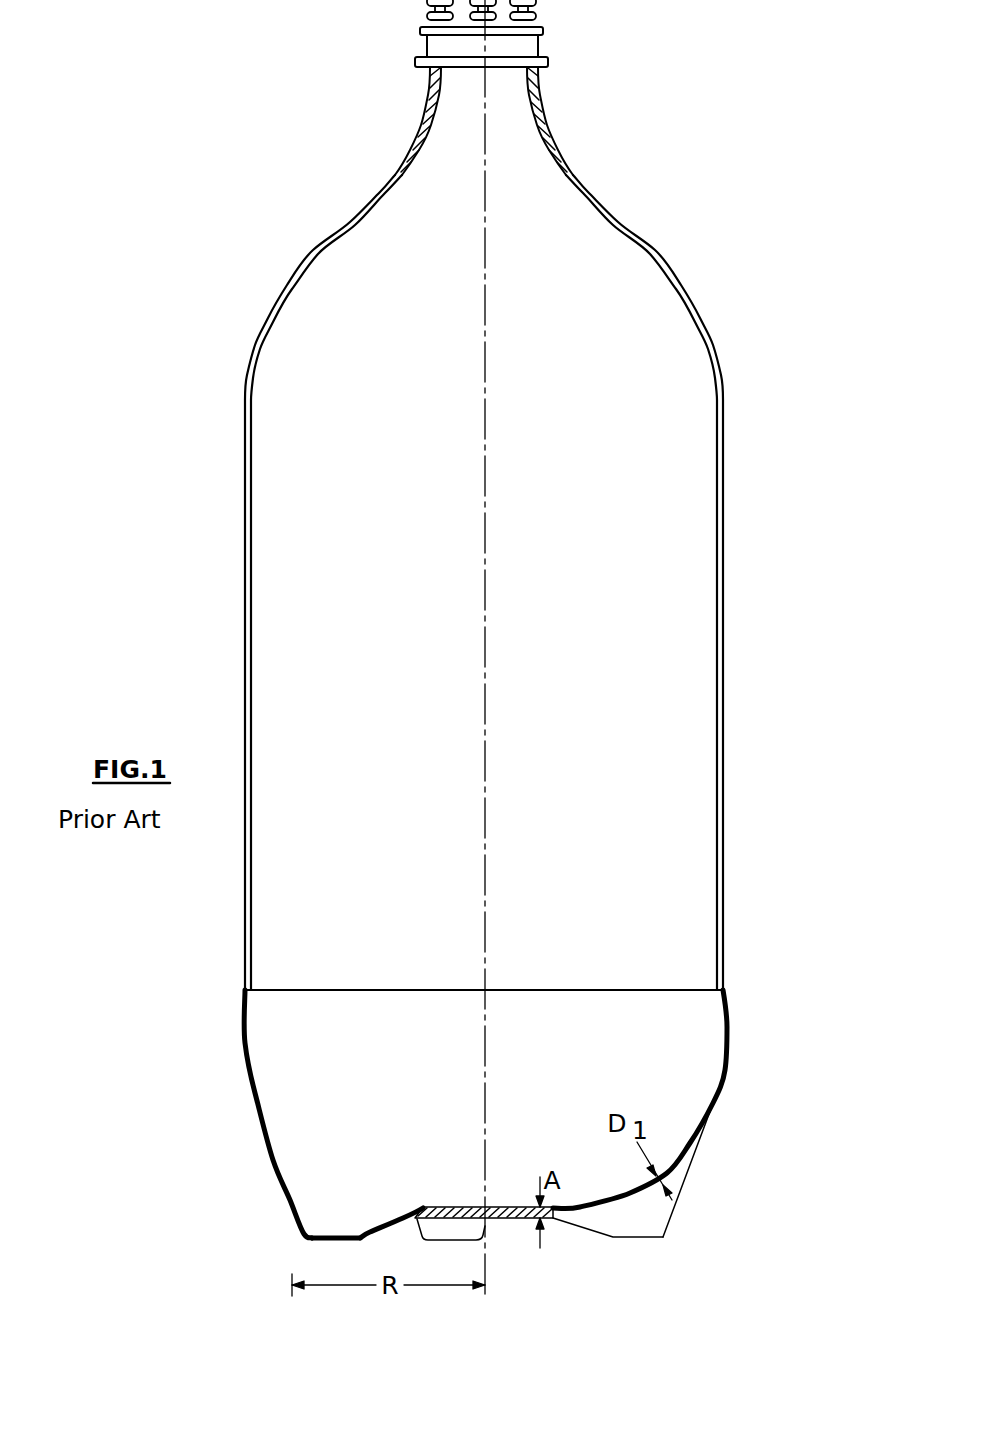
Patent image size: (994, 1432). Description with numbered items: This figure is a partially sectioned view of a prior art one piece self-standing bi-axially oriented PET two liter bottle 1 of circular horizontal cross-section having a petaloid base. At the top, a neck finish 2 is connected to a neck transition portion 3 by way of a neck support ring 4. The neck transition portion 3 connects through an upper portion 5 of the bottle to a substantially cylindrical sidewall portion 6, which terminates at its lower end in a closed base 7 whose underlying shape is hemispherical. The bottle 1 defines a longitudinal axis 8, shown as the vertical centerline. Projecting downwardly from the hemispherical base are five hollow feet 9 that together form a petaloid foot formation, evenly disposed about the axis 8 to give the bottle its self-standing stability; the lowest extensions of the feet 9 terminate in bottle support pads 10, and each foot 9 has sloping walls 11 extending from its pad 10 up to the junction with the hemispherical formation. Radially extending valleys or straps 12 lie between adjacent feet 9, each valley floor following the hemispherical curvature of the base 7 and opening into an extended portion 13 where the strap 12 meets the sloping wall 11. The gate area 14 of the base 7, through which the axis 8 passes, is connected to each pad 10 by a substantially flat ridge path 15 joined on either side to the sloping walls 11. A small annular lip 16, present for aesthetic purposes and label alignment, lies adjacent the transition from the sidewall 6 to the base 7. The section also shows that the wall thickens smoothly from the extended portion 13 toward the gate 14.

The bottle 1 is at (777, 427).
The neck finish 2 is at (540, 40).
The neck transition portion 3 is at (538, 98).
The neck support ring 4 is at (545, 57).
The upper portion 5 is at (651, 78).
The sidewall portion 6 is at (747, 372).
The base 7 is at (748, 1058).
The longitudinal axis 8 is at (490, 1289).
The feet 9 is at (370, 1240).
The bottle support pads 10 is at (343, 1237).
The sloping walls 11 is at (216, 1000).
The valleys 12 is at (639, 1218).
The extended portion 13 is at (716, 1103).
The gate area 14 is at (602, 1168).
The ridge path 15 is at (577, 1228).
The annular lip 16 is at (727, 984).